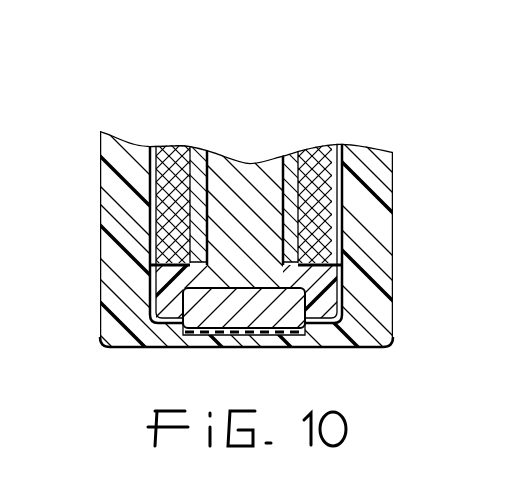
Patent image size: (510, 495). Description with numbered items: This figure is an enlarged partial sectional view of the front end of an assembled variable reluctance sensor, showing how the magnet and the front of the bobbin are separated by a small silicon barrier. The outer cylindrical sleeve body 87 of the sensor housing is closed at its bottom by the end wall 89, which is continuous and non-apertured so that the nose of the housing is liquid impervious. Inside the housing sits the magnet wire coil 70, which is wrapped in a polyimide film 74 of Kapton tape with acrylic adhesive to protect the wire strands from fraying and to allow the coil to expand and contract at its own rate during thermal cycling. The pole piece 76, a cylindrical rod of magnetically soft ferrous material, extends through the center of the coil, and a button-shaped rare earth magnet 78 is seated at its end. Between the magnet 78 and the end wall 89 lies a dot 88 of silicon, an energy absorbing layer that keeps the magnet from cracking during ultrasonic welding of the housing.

The magnet wire coil 70 is at (315, 157).
The polyimide film 74 is at (337, 143).
The pole piece 76 is at (231, 172).
The magnet 78 is at (283, 317).
The sleeve body 87 is at (108, 183).
The dot 88 is at (197, 334).
The end wall 89 is at (237, 343).